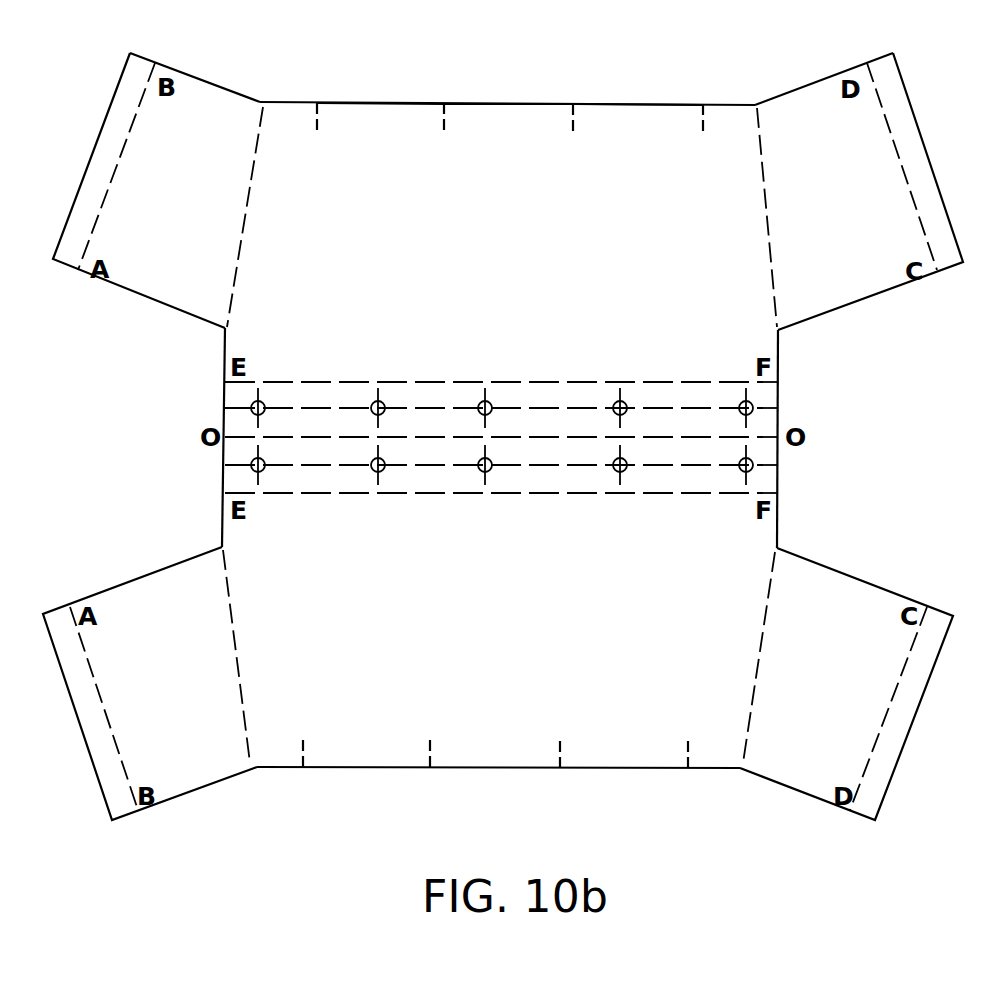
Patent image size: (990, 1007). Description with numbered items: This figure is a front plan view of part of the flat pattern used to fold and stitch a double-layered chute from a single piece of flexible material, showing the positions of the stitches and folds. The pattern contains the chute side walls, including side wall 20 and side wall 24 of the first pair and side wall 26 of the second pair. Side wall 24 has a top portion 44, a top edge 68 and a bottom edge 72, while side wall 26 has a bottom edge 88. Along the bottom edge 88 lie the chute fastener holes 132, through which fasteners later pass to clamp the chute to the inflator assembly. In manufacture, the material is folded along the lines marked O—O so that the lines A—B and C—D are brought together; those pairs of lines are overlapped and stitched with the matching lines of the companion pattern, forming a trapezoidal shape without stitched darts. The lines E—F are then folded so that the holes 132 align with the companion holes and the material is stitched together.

The side wall 20 is at (810, 99).
The side wall 24 is at (210, 98).
The side wall 26 is at (372, 118).
The top edge 68 is at (495, 106).
The top portion 44 is at (626, 118).
The bottom edge 72 is at (155, 303).
The bottom edge 88 is at (777, 437).
The chute fastener holes 132 is at (386, 403).